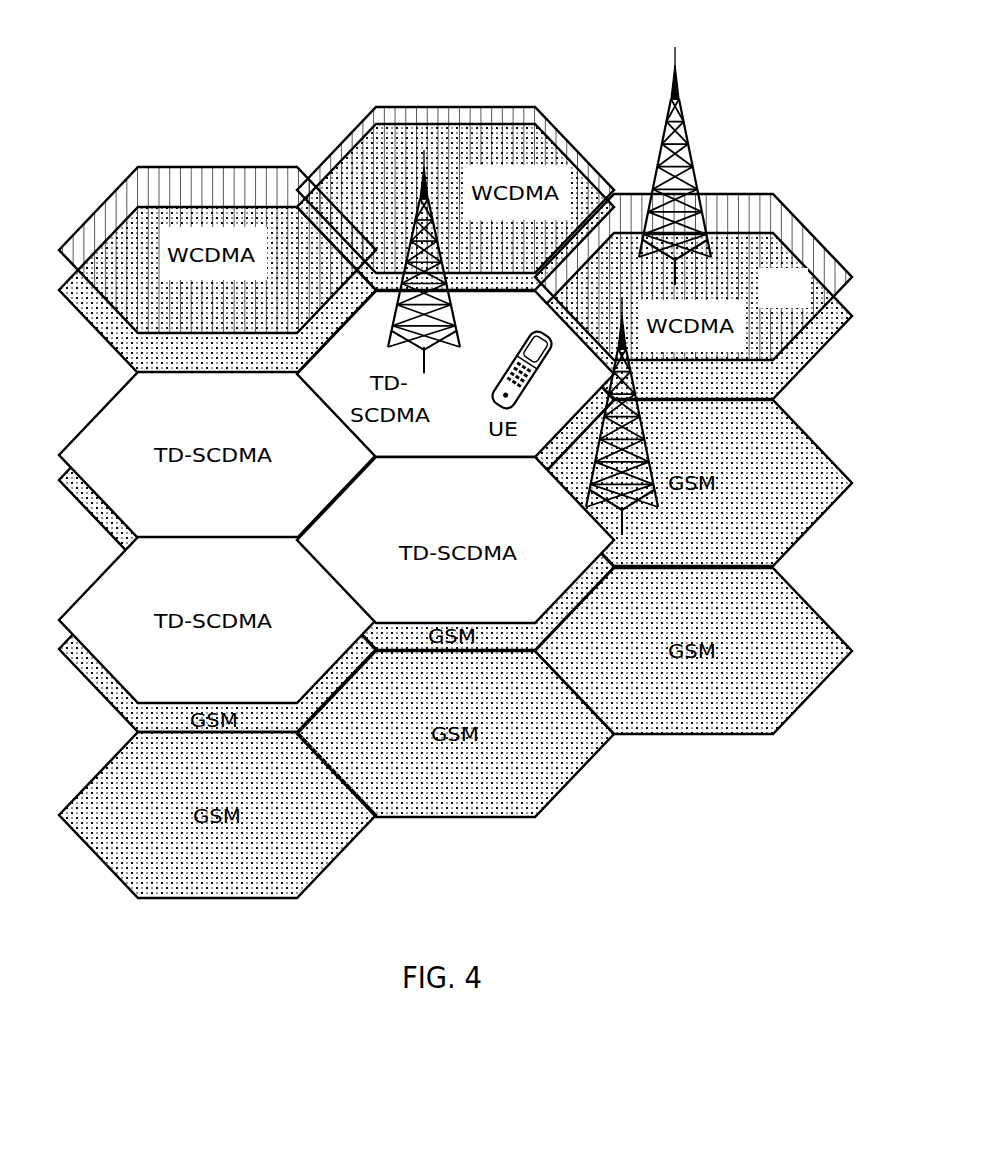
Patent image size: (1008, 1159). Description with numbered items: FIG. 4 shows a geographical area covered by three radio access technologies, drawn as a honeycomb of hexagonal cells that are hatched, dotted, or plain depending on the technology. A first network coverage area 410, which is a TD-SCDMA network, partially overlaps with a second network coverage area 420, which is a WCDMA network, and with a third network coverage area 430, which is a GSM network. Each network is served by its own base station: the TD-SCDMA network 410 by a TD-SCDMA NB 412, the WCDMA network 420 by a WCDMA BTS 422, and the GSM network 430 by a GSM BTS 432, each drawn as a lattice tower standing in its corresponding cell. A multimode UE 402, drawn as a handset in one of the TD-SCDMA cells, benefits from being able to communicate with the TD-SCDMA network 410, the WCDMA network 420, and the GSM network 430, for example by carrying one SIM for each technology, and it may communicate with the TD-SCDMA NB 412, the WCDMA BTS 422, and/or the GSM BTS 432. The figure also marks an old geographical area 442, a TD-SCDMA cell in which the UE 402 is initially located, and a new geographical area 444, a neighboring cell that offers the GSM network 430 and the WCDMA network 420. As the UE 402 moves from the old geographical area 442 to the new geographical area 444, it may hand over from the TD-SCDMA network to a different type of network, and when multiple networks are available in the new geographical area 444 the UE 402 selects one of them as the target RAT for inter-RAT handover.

The multimode UE 402 is at (530, 338).
The first network coverage area 410 is at (327, 497).
The TD-SCDMA NB 412 is at (424, 160).
The second network coverage area 420 is at (455, 233).
The WCDMA BTS 422 is at (678, 50).
The third network coverage area 430 is at (830, 625).
The GSM BTS 432 is at (645, 424).
The old geographical area 442 is at (448, 444).
The new geographical area 444 is at (800, 302).